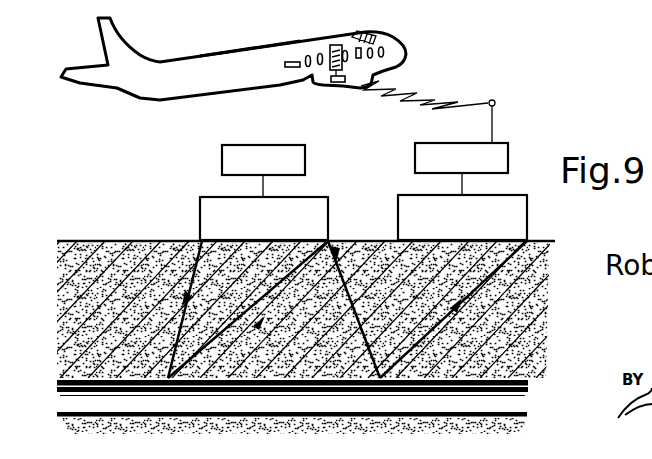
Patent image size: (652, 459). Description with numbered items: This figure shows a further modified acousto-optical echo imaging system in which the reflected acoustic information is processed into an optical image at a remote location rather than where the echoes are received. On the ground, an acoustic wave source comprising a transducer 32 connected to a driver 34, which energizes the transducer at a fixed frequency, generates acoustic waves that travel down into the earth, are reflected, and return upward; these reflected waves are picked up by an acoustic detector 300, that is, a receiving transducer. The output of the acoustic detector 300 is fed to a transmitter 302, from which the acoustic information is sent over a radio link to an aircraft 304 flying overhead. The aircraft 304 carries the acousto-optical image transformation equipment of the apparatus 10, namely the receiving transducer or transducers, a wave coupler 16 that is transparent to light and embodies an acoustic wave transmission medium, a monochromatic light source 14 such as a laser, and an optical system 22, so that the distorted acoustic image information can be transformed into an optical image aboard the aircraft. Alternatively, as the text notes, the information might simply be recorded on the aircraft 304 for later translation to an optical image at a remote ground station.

The acousto-optical echo imaging apparatus 10 is at (309, 44).
The monochromatic light source 14 is at (293, 67).
The wave coupler 16 is at (335, 46).
The optical system 22 is at (355, 34).
The aircraft 304 is at (256, 47).
The transducer 32 is at (264, 207).
The driver 34 is at (263, 160).
The acoustic detector 300 is at (462, 206).
The transmitter 302 is at (461, 136).